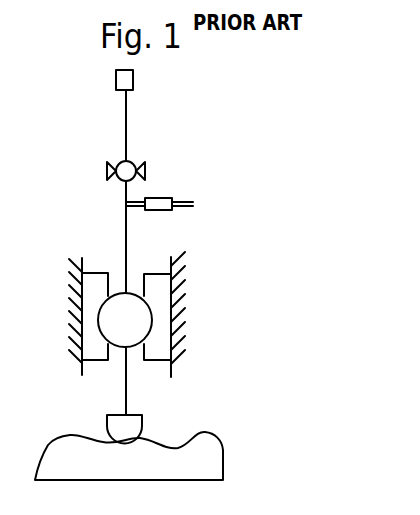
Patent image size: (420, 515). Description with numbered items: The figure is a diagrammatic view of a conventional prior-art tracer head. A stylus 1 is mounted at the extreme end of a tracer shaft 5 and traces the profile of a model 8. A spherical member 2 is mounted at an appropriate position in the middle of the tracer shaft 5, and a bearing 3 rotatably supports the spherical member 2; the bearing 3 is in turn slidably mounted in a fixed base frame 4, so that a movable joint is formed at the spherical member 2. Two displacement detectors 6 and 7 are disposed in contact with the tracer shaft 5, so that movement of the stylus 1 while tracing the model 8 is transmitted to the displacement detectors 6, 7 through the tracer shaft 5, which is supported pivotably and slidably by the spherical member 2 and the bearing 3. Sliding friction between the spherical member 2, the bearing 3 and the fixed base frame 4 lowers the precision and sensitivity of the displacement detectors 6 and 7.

The stylus 1 is at (143, 427).
The spherical member 2 is at (132, 337).
The bearing 3 is at (155, 285).
The fixed base frame 4 is at (177, 320).
The tracer shaft 5 is at (123, 388).
The displacement detector 6 is at (163, 197).
The displacement detector 7 is at (135, 77).
The model 8 is at (222, 438).